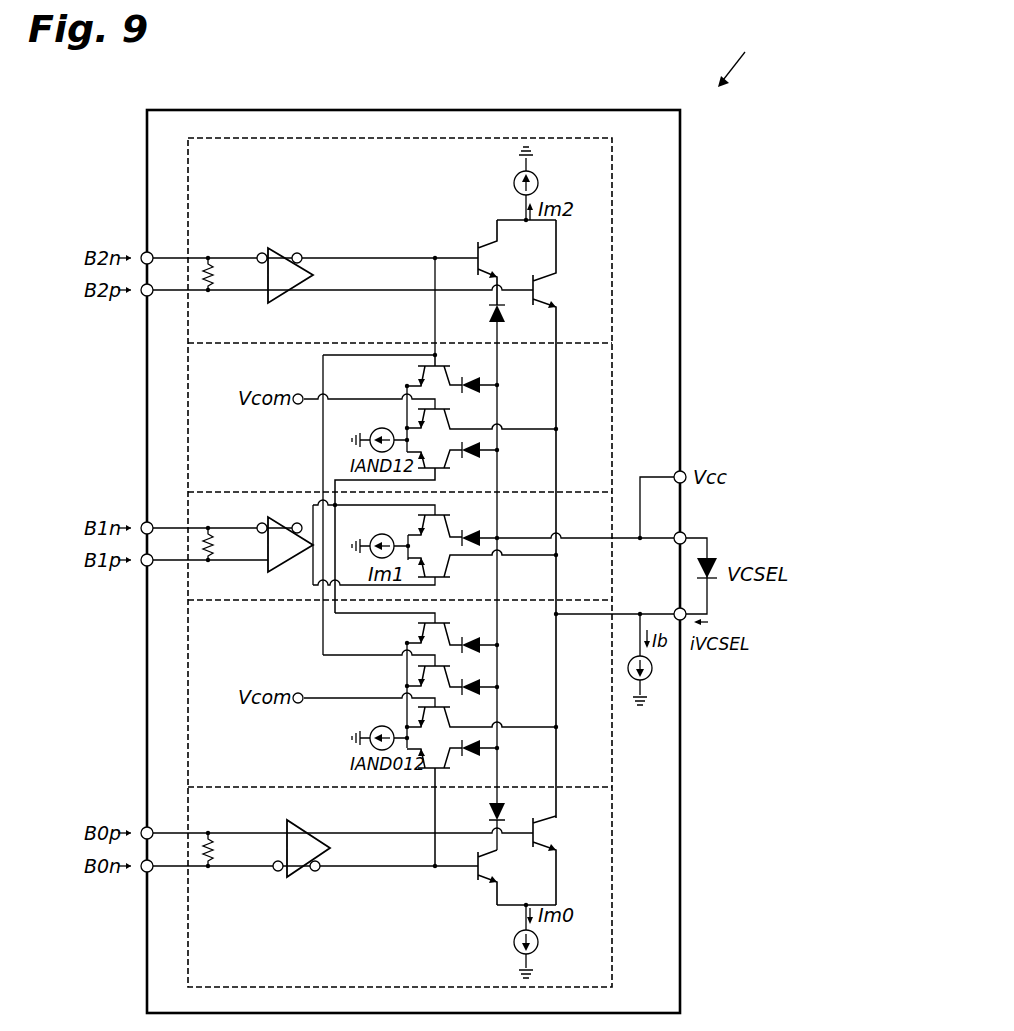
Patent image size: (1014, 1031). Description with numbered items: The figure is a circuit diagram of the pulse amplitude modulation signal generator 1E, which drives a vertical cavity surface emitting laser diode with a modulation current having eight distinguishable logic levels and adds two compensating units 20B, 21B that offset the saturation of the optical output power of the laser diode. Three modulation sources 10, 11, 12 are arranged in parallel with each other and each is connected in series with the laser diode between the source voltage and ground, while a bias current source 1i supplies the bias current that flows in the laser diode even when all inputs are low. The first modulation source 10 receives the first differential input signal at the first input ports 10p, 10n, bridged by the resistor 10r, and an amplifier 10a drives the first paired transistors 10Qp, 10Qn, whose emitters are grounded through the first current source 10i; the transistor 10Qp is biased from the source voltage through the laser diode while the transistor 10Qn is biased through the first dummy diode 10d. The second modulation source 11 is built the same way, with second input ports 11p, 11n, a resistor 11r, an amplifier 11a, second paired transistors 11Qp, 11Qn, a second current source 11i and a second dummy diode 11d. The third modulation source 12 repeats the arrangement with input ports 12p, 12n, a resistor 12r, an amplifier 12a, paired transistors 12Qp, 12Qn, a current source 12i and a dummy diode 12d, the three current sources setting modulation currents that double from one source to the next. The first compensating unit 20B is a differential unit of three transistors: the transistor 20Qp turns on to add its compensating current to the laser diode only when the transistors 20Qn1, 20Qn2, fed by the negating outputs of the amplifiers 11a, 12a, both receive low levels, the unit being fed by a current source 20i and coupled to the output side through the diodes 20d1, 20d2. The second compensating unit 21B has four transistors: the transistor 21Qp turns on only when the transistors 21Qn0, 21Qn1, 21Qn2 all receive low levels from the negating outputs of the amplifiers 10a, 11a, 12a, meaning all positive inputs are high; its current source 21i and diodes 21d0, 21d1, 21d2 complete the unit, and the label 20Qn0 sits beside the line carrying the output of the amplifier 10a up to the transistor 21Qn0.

The PAM signal generator 1E is at (785, 52).
The modulation source 12 is at (188, 186).
The second negative input terminal 12n is at (142, 254).
The second positive input terminal 12p is at (141, 296).
The second termination resistor 12r is at (214, 268).
The amplifier 12a is at (285, 256).
The second block npn transistor 12Qn is at (477, 262).
The second block pnp-side transistor 12Qp is at (552, 292).
The current source 12i is at (513, 184).
The second block diode 12d is at (489, 318).
The compensating unit 20B is at (188, 437).
The transistor 20Qn2 is at (422, 372).
The transistor 20Qp is at (417, 414).
The AND block current source 20i is at (370, 436).
The transistor 20Qn1 is at (450, 461).
The AND block diode 20d2 is at (480, 385).
The AND block diode 20d1 is at (480, 450).
The modulation source 11 is at (188, 501).
The second input port 11n is at (142, 523).
The second input port 11p is at (142, 566).
The resistor 11r is at (214, 562).
The amplifier 11a is at (278, 560).
The second paired transistor 11Qn is at (452, 520).
The second paired transistor 11Qp is at (452, 572).
The second current source 11i is at (380, 534).
The second dummy diode 11d is at (481, 538).
The compensating unit 21B is at (188, 746).
The transistor 21Qn1 is at (485, 632).
The transistor 21Qn2 is at (420, 673).
The transistor 21Qp is at (420, 717).
The AND block current source 21i is at (370, 736).
The transistor 21Qn0 is at (422, 770).
The AND block diode 21d1 is at (480, 646).
The AND block diode 21d2 is at (480, 688).
The AND block diode 21d0 is at (480, 749).
The transistor connection line 20Qn0 is at (400, 808).
The modulation source 10 is at (188, 954).
The first input port 10n is at (142, 827).
The first input port 10p is at (142, 872).
The resistor 10r is at (222, 850).
The amplifier 10a is at (292, 878).
The first dummy diode 10d is at (489, 818).
The first paired transistor 10Qn is at (482, 888).
The first paired transistor 10Qp is at (546, 832).
The first current source 10i is at (513, 942).
The current source 1i is at (648, 680).